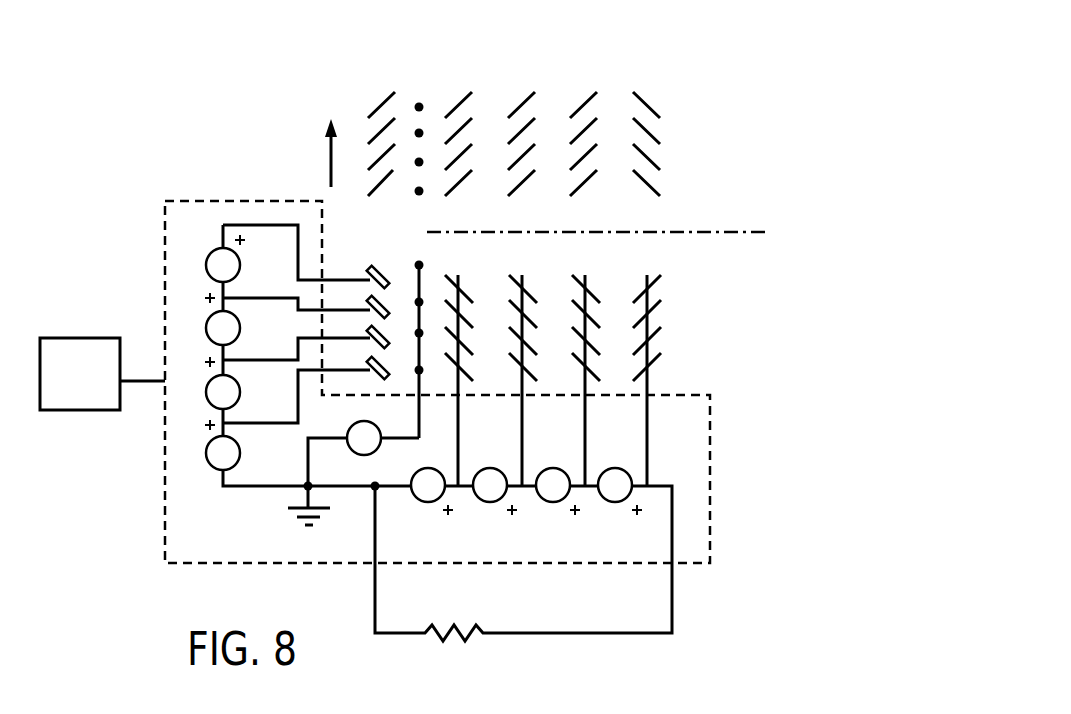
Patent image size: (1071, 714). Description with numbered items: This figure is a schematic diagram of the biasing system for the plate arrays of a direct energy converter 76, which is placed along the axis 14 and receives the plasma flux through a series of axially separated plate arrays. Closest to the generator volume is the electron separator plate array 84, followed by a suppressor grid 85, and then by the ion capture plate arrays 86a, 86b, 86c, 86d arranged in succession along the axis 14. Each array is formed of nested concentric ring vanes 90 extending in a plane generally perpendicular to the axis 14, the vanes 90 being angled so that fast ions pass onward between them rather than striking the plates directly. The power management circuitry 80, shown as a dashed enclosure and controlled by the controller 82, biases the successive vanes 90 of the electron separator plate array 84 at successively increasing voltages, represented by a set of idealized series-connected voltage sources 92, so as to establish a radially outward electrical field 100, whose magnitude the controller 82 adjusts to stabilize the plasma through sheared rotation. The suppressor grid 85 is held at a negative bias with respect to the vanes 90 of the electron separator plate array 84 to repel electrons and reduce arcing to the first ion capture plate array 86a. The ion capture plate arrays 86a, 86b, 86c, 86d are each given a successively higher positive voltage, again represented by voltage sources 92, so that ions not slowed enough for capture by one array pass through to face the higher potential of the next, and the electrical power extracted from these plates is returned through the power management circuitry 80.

The axis 14 is at (714, 232).
The direct energy converter 76 is at (326, 62).
The power management circuitry 80 is at (188, 200).
The controller 82 is at (102, 374).
The electron separator plate array 84 is at (373, 78).
The suppressor grid 85 is at (419, 78).
The ion capture plate array 86a is at (456, 78).
The ion capture plate array 86b is at (516, 78).
The ion capture plate array 86c is at (583, 78).
The ion capture plate array 86d is at (656, 78).
The ring vanes 90 is at (382, 156).
The voltage sources 92 is at (206, 392).
The electrical field 100 is at (330, 148).